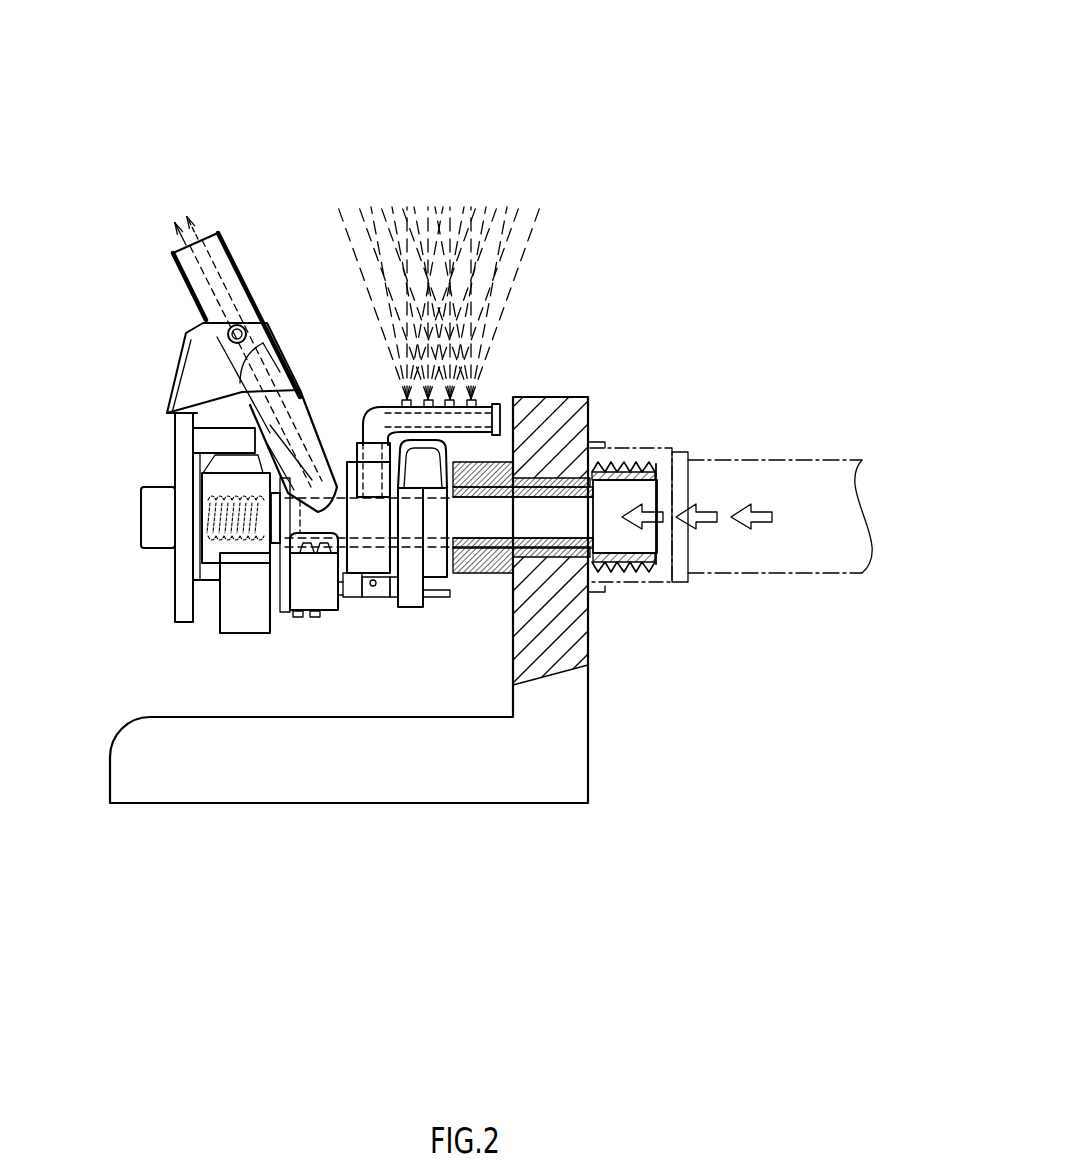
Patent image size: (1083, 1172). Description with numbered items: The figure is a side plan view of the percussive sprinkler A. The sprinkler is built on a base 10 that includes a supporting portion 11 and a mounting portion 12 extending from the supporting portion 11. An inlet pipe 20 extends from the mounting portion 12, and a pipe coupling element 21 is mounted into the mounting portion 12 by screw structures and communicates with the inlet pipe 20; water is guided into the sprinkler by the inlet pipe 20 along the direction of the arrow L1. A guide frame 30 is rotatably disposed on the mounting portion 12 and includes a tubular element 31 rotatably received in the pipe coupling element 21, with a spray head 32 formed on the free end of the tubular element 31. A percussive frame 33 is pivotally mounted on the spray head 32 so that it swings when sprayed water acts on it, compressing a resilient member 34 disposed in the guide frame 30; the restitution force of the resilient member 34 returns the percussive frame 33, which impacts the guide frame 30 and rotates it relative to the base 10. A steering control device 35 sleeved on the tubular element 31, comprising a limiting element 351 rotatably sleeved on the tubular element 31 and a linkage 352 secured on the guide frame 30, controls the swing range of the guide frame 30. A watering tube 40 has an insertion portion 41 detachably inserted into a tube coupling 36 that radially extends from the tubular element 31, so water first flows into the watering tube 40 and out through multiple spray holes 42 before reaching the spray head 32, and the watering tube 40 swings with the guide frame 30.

The percussive sprinkler A is at (704, 156).
The base 10 is at (399, 633).
The supporting portion 11 is at (318, 805).
The mounting portion 12 is at (590, 425).
The inlet pipe 20 is at (633, 578).
The pipe coupling element 21 is at (497, 570).
The arrow L1 is at (757, 525).
The guide frame 30 is at (143, 316).
The tubular element 31 is at (478, 567).
The spray head 32 is at (310, 432).
The percussive frame 33 is at (258, 307).
The resilient member 34 is at (245, 545).
The steering control device 35 is at (364, 625).
The limiting element 351 is at (403, 597).
The linkage 352 is at (438, 599).
The tube coupling 36 is at (357, 450).
The watering tube 40 is at (485, 326).
The insertion portion 41 is at (358, 408).
The spray holes 42 is at (473, 406).